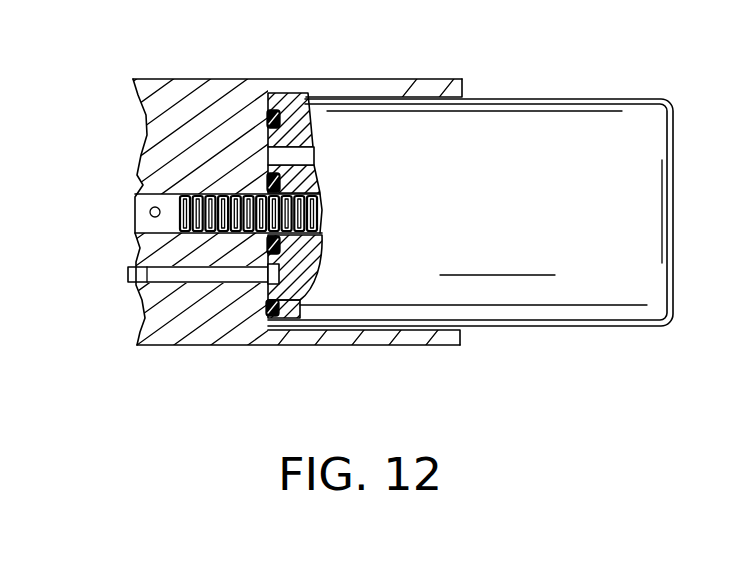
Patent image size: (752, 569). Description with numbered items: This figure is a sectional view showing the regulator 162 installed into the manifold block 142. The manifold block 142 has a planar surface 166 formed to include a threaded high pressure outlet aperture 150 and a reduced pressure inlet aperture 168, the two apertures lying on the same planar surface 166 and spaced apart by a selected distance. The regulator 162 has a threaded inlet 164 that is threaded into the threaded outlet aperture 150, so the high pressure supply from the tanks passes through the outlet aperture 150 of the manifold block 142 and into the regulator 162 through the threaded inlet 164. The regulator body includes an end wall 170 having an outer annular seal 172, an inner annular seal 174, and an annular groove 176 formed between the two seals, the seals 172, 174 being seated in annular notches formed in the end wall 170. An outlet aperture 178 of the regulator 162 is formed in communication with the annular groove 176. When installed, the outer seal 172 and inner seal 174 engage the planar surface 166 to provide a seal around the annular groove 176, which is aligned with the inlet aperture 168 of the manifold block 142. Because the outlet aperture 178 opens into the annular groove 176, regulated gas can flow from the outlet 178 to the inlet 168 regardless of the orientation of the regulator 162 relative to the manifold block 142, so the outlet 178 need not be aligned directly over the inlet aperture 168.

The manifold block 142 is at (244, 79).
The outlet aperture 150 is at (135, 223).
The regulator 162 is at (556, 152).
The threaded inlet 164 is at (250, 213).
The planar surface 166 is at (292, 294).
The inlet aperture 168 is at (136, 262).
The end wall 170 is at (272, 132).
The outer annular seal 172 is at (266, 311).
The inner annular seal 174 is at (278, 182).
The annular groove 176 is at (268, 278).
The outlet aperture 178 is at (297, 157).